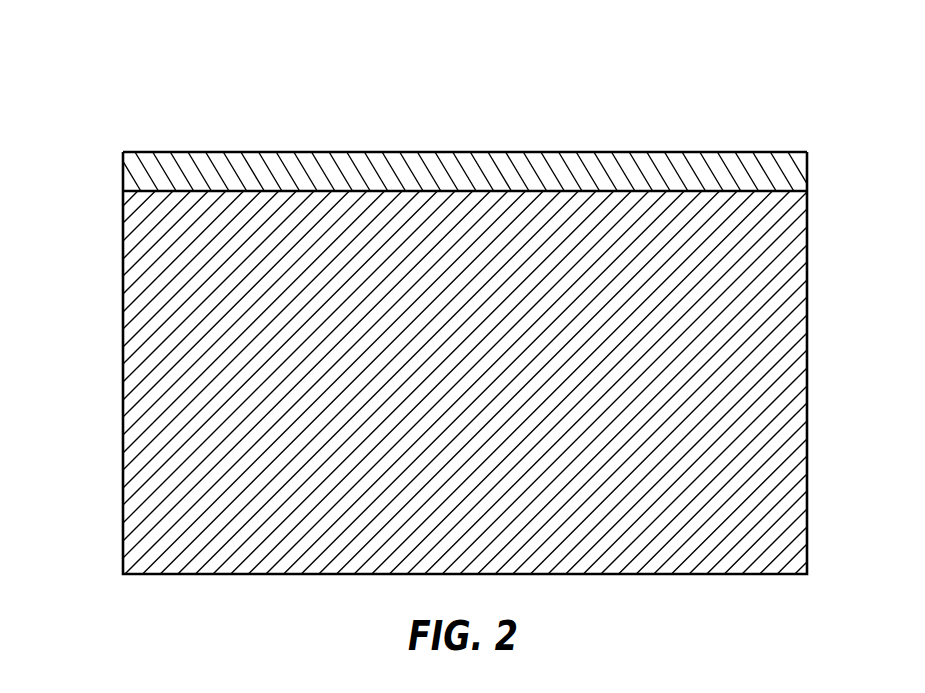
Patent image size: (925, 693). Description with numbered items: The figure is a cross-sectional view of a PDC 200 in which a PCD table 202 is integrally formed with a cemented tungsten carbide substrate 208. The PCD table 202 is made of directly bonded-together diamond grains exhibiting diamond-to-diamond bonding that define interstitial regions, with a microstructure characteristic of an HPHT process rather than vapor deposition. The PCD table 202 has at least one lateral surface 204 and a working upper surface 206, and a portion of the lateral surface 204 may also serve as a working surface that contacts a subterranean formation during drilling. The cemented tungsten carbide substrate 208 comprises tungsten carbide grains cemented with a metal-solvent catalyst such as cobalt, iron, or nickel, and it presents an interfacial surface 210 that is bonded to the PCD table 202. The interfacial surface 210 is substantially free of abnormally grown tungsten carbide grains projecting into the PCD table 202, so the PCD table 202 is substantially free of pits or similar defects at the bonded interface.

The PDC 200 is at (731, 101).
The PCD table 202 is at (445, 183).
The lateral surface 204 is at (122, 169).
The upper surface 206 is at (351, 152).
The cemented tungsten carbide substrate 208 is at (437, 373).
The interfacial surface 210 is at (766, 193).